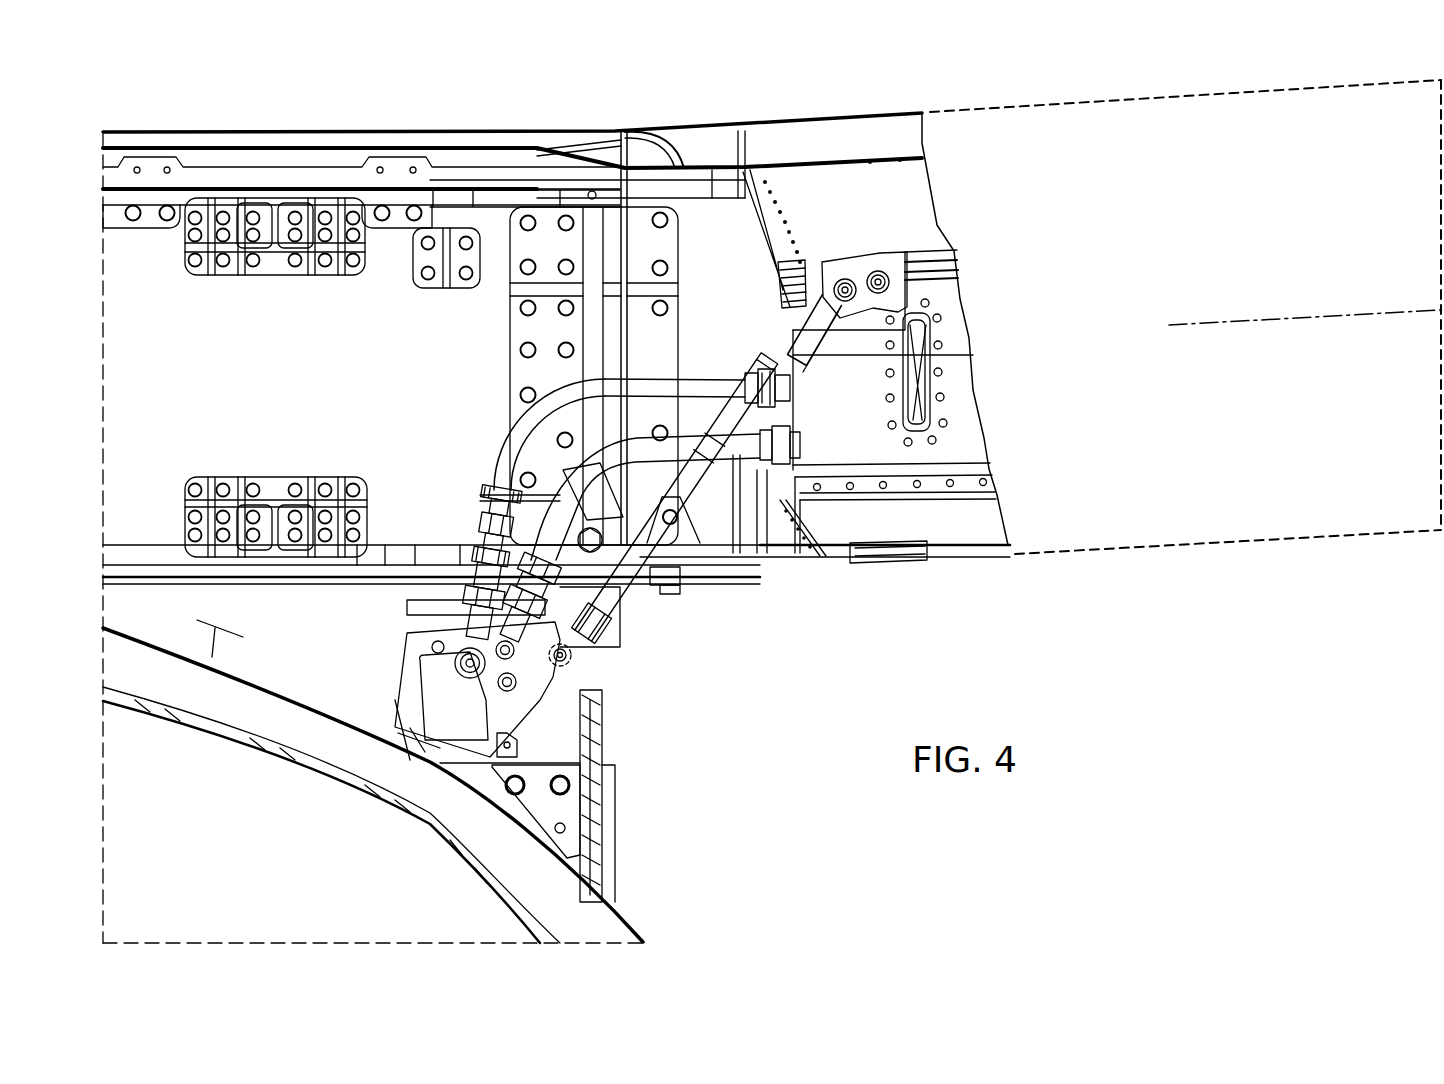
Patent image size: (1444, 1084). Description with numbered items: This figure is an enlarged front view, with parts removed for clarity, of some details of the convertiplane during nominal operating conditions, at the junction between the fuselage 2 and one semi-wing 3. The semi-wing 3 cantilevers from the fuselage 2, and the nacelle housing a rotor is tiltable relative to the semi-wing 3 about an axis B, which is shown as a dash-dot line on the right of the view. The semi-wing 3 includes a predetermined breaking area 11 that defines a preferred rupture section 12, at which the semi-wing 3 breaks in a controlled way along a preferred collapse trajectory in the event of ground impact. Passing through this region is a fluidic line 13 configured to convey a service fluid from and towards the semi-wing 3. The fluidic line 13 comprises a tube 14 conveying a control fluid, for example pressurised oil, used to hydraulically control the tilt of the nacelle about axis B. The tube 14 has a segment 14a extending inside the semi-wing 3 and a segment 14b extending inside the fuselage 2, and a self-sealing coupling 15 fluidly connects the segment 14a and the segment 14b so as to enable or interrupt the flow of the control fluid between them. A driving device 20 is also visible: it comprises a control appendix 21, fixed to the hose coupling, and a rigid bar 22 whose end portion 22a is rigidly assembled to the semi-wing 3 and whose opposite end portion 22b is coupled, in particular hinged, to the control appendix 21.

The fuselage 2 is at (634, 913).
The semi-wing 3 is at (1234, 495).
The axis B is at (1328, 319).
The predetermined breaking area 11 is at (650, 114).
The preferred rupture section 12 is at (636, 249).
The fluidic line 13 is at (486, 410).
The tube 14 is at (493, 460).
The segment 14a is at (650, 385).
The segment 14b is at (468, 676).
The self-sealing coupling 15 is at (460, 526).
The driving device 20 is at (631, 633).
The control appendix 21 is at (457, 632).
The rigid bar 22 is at (708, 545).
The end portion 22a is at (833, 328).
The end portion 22b is at (585, 660).